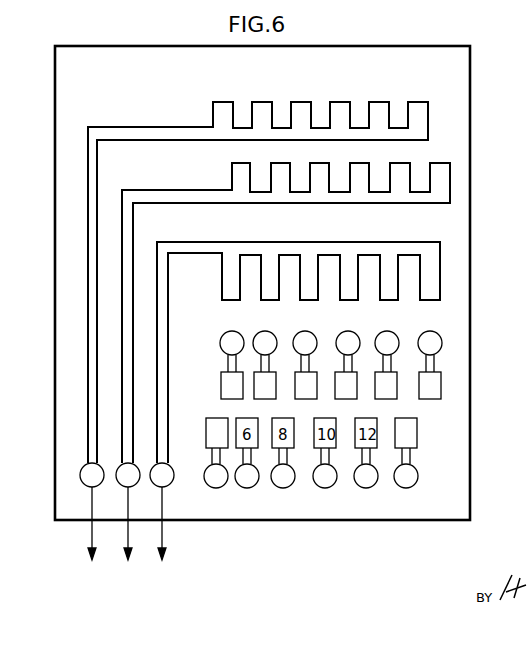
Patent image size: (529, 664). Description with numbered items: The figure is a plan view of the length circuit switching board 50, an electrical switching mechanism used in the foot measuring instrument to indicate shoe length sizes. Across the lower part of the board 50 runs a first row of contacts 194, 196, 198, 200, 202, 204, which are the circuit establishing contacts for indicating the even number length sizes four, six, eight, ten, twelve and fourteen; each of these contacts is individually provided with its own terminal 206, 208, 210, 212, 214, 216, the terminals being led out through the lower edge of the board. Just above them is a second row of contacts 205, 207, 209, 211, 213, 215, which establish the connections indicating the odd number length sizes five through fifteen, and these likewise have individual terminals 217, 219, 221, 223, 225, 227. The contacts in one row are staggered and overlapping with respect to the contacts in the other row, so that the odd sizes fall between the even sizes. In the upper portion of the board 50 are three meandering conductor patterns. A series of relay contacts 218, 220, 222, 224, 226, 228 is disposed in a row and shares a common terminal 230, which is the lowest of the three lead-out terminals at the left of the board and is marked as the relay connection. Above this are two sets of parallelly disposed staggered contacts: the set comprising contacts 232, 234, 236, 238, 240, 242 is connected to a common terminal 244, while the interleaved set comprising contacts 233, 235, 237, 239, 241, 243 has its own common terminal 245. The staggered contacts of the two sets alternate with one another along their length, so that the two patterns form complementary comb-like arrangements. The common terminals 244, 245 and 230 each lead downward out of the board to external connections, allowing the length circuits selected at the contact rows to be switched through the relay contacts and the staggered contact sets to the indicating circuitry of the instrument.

The length circuit switching board 50 is at (54, 82).
The staggered contact 233 is at (213, 108).
The staggered contact 235 is at (244, 110).
The staggered contact 237 is at (300, 110).
The staggered contact 239 is at (340, 110).
The staggered contact 241 is at (380, 110).
The staggered contact 243 is at (420, 110).
The staggered contact 232 is at (232, 178).
The staggered contact 234 is at (270, 178).
The staggered contact 236 is at (320, 178).
The staggered contact 238 is at (360, 180).
The staggered contact 240 is at (400, 180).
The staggered contact 242 is at (452, 176).
The relay contact 228 is at (430, 275).
The relay contact 218 is at (232, 270).
The relay contact 220 is at (268, 272).
The relay contact 222 is at (308, 272).
The relay contact 224 is at (346, 272).
The relay contact 226 is at (390, 272).
The common terminal 245 is at (80, 473).
The common terminal 244 is at (116, 483).
The common terminal 230 is at (174, 481).
The terminal 217 is at (226, 342).
The terminal 219 is at (268, 338).
The terminal 221 is at (308, 338).
The terminal 223 is at (350, 338).
The terminal 225 is at (390, 338).
The terminal 227 is at (442, 343).
The contact 205 is at (226, 399).
The contact 207 is at (268, 411).
The contact 209 is at (298, 399).
The contact 211 is at (337, 399).
The contact 213 is at (392, 399).
The contact 215 is at (441, 385).
The contact 194 is at (208, 458).
The contact 204 is at (417, 436).
The contact 196 is at (258, 462).
The contact 198 is at (296, 462).
The contact 200 is at (338, 462).
The contact 202 is at (378, 462).
The terminal 216 is at (418, 480).
The terminal 206 is at (226, 488).
The terminal 208 is at (256, 488).
The terminal 210 is at (292, 488).
The terminal 212 is at (334, 488).
The terminal 214 is at (376, 488).